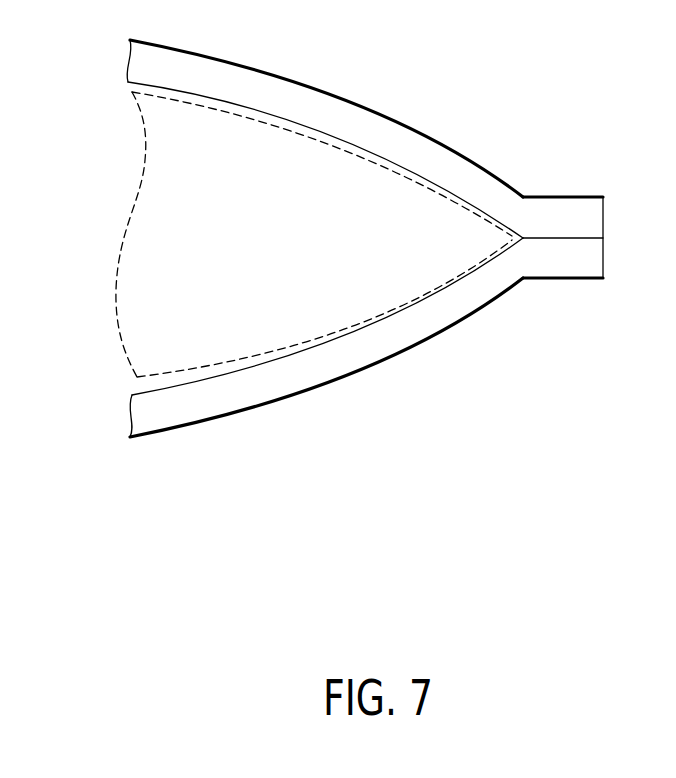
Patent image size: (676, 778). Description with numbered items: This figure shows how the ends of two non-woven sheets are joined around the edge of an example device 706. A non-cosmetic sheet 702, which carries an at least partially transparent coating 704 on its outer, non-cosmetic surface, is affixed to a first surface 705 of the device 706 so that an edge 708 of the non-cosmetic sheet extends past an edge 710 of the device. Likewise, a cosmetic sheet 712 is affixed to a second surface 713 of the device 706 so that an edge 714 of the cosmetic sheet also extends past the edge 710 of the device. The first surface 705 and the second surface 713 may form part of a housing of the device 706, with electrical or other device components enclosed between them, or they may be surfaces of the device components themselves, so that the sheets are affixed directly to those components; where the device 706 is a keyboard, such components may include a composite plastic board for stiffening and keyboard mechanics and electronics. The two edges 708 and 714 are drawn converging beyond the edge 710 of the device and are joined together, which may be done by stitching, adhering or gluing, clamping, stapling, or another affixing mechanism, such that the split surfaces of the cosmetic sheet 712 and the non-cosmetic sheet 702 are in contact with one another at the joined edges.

The non-cosmetic sheet 702 is at (129, 50).
The at least partially transparent coating 704 is at (152, 42).
The first surface 705 is at (223, 108).
The device 706 is at (167, 153).
The edge of the non-cosmetic sheet 708 is at (586, 199).
The edge of the device 710 is at (503, 238).
The cosmetic sheet 712 is at (130, 415).
The second surface 713 is at (250, 355).
The edge of the cosmetic sheet 714 is at (586, 277).